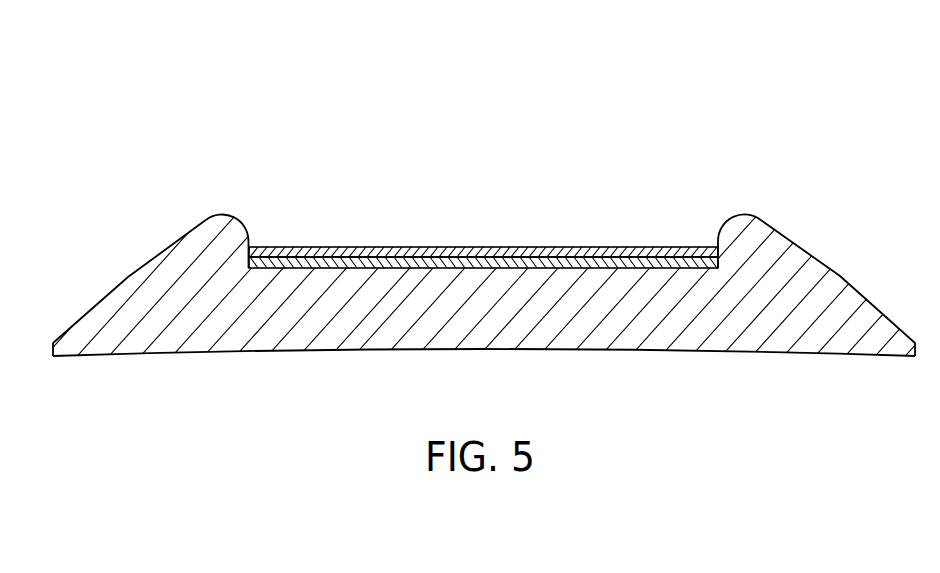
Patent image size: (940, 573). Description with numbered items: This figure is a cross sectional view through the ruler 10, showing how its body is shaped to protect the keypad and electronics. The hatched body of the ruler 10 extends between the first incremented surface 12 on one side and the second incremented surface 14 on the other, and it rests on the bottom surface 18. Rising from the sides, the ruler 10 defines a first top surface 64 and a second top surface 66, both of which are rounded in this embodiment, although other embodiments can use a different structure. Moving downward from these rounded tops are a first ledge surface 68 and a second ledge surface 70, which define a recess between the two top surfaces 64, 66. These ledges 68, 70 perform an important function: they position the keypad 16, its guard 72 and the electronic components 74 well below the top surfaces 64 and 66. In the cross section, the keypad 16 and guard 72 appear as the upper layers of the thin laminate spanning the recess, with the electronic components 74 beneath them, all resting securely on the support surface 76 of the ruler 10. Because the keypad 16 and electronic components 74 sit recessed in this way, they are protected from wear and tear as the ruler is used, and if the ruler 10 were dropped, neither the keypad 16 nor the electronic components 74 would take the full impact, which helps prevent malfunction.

The ruler 10 is at (578, 124).
The first incremented surface 12 is at (840, 276).
The second incremented surface 14 is at (123, 281).
The keypad 16 is at (377, 247).
The bottom surface 18 is at (318, 351).
The first top surface 64 is at (213, 214).
The second top surface 66 is at (752, 214).
The first ledge surface 68 is at (252, 245).
The second ledge surface 70 is at (718, 242).
The guard 72 is at (437, 251).
The electronic components 74 is at (525, 261).
The support surface 76 is at (573, 270).